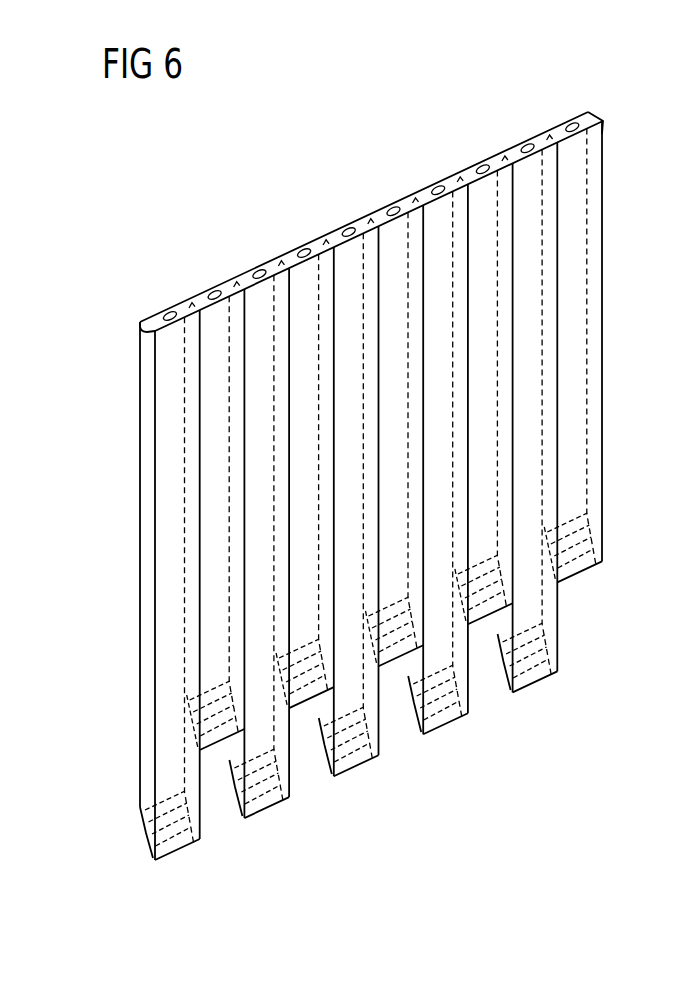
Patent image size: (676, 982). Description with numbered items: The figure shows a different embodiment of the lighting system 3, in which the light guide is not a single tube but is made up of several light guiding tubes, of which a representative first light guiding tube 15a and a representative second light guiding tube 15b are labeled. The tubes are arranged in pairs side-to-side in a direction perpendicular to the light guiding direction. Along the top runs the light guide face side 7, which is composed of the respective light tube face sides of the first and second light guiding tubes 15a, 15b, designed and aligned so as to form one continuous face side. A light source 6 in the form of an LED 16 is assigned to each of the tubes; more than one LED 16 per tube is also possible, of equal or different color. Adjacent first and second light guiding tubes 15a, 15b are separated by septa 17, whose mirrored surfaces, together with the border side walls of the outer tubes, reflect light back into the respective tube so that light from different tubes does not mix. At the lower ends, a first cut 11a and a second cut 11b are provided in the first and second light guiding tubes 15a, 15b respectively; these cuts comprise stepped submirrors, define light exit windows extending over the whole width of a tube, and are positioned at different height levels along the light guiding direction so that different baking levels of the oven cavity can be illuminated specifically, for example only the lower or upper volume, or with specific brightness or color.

The lighting system 3 is at (298, 163).
The light source 6 is at (393, 202).
The light guide face side 7 is at (594, 116).
The LED 16 is at (256, 263).
The septum 17 is at (193, 495).
The first light guiding tube 15a is at (170, 560).
The second light guiding tube 15b is at (217, 600).
The first cut 11a is at (167, 822).
The second cut 11b is at (197, 710).